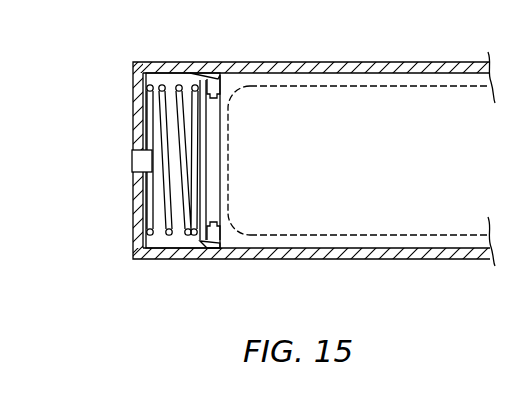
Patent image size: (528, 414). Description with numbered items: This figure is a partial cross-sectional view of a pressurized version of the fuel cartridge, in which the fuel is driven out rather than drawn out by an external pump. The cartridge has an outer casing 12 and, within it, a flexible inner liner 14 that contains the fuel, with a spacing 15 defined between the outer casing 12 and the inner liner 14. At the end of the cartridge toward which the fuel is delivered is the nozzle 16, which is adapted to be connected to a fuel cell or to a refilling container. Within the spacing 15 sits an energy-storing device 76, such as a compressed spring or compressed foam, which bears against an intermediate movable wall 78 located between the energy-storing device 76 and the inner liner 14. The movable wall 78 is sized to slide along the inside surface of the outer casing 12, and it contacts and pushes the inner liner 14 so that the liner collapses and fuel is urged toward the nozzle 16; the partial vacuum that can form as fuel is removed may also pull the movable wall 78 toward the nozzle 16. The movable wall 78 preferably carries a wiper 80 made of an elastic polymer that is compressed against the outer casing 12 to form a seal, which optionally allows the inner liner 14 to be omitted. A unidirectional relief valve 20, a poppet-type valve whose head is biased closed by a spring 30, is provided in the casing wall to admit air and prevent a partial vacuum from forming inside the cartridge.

The outer casing 12 is at (317, 63).
The inner liner 14 is at (413, 102).
The spacing 15 is at (168, 82).
The nozzle 16 is at (227, 78).
The unidirectional relief valve 20 is at (101, 173).
The spring 30 is at (134, 163).
The energy-storing device 76 is at (167, 208).
The intermediate movable wall 78 is at (210, 207).
The wiper 80 is at (200, 230).